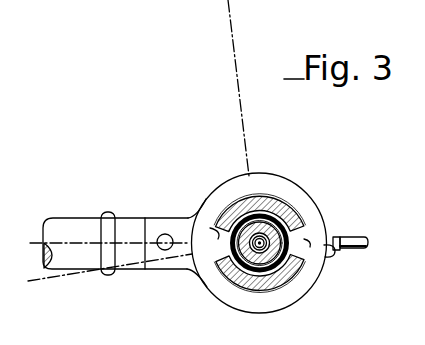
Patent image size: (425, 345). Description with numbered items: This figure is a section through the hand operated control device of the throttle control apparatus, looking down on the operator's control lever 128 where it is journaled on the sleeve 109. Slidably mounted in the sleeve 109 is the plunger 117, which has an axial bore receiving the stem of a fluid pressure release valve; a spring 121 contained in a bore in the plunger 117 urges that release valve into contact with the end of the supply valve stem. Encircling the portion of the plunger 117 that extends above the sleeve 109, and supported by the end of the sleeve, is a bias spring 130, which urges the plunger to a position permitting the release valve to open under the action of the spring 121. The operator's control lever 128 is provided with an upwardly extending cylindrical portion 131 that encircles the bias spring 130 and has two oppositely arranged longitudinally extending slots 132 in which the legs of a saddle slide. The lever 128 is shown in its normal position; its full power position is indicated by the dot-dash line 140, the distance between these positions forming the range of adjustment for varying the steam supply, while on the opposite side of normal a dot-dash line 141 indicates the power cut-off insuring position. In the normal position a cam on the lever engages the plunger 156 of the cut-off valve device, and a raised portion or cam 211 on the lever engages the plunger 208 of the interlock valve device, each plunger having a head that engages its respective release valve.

The dot-dash line 140 is at (228, 28).
The dot-dash line 141 is at (48, 282).
The operator's control lever 128 is at (83, 217).
The slots 132 is at (196, 212).
The cylindrical portion 131 is at (279, 198).
The plunger 117 is at (292, 266).
The bias spring 130 is at (298, 258).
The spring 121 is at (224, 257).
The sleeve 109 is at (237, 275).
The plunger 208 is at (340, 238).
The plunger 156 is at (370, 238).
The cam 211 is at (336, 253).